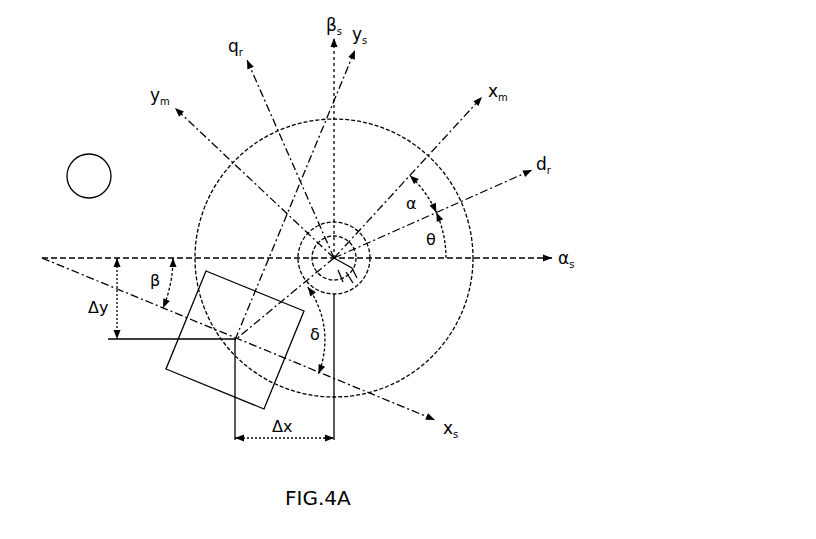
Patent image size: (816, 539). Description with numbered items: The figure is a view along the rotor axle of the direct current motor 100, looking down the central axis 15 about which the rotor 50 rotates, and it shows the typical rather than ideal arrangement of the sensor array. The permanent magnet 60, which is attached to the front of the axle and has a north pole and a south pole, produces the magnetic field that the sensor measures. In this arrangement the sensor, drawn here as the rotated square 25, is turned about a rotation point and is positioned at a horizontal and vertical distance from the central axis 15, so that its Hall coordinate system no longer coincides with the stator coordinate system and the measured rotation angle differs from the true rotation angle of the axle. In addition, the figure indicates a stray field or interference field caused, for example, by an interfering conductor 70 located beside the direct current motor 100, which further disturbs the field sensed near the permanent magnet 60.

The central axis 15 is at (356, 272).
The sensor 25 is at (210, 393).
The rotor 50 is at (352, 290).
The permanent magnet 60 is at (340, 297).
The interfering conductor 70 is at (89, 154).
The direct current motor 100 is at (467, 303).